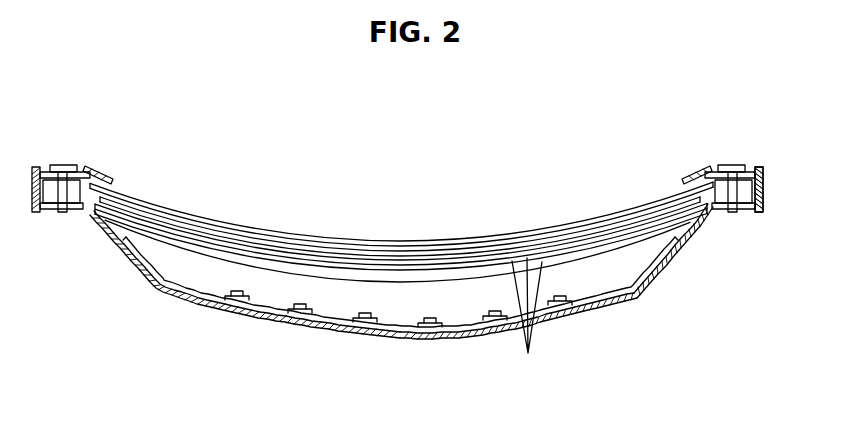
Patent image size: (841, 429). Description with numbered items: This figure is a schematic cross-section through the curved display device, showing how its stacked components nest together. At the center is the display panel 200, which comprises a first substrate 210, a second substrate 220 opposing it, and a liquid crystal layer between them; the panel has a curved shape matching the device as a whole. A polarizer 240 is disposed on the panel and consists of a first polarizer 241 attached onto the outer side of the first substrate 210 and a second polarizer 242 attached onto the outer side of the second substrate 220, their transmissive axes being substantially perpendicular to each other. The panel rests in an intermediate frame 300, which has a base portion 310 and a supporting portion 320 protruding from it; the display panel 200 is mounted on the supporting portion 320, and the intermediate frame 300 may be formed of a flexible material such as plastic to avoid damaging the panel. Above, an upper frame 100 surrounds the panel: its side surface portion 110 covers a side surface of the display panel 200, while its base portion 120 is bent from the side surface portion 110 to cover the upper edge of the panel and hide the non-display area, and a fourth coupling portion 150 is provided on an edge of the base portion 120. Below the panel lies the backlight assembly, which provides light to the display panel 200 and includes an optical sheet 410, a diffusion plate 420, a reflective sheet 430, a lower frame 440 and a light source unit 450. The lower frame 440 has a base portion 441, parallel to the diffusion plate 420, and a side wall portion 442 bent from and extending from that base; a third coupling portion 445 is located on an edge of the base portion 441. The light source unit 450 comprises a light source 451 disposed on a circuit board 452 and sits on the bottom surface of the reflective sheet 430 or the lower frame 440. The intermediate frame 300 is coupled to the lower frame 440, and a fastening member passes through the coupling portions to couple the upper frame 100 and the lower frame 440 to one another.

The upper frame 100 is at (747, 146).
The side surface portion 110 is at (737, 189).
The base portion 120 is at (697, 175).
The fourth coupling portion 150 is at (730, 187).
The display panel 200 is at (401, 216).
The first substrate 210 is at (463, 193).
The second substrate 220 is at (464, 238).
The polarizer 240 is at (401, 211).
The first polarizer 241 is at (352, 193).
The second polarizer 242 is at (352, 239).
The intermediate frame 300 is at (72, 236).
The base portion 310 is at (50, 212).
The supporting portion 320 is at (88, 218).
The optical sheet 410 is at (528, 353).
The diffusion plate 420 is at (462, 281).
The reflective sheet 430 is at (180, 300).
The lower frame 440 is at (585, 275).
The base portion 441 is at (626, 306).
The side wall portion 442 is at (764, 201).
The third coupling portion 445 is at (712, 214).
The light source unit 450 is at (385, 347).
The light source 451 is at (243, 295).
The circuit board 452 is at (232, 301).